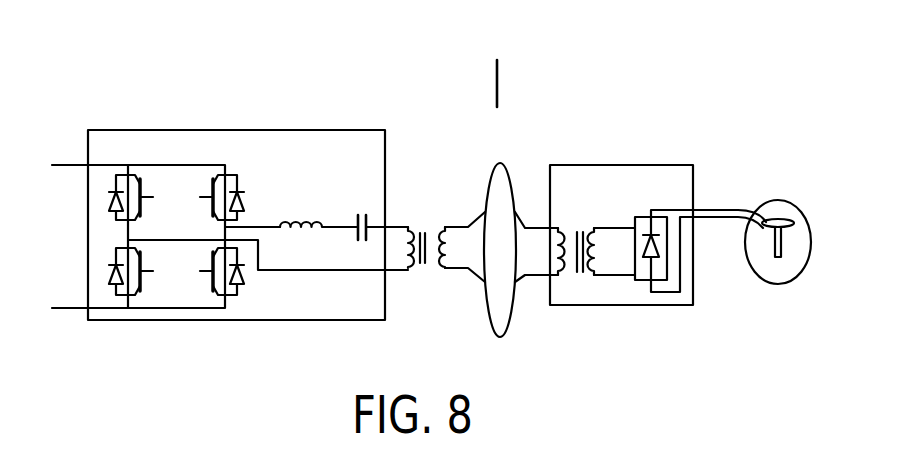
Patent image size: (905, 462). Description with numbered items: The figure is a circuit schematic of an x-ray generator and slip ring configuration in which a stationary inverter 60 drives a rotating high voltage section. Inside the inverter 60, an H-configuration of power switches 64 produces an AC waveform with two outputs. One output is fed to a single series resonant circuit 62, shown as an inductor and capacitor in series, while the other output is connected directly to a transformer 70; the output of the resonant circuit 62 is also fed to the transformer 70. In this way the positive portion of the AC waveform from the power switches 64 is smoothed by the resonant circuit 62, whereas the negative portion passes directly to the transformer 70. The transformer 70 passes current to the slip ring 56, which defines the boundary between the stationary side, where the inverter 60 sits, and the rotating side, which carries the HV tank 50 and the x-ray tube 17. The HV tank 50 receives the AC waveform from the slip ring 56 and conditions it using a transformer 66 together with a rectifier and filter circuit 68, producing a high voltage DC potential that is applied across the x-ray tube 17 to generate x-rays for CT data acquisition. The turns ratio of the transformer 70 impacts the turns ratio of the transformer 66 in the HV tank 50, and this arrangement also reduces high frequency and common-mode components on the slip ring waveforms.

The inverter 60 is at (257, 130).
The power switches 64 is at (210, 183).
The series resonant circuit 62 is at (321, 176).
The transformer 70 is at (423, 214).
The slip ring 56 is at (505, 170).
The high voltage tank 50 is at (678, 165).
The transformer 66 is at (585, 292).
The rectifier and filter circuit 68 is at (638, 299).
The x-ray tube 17 is at (797, 277).